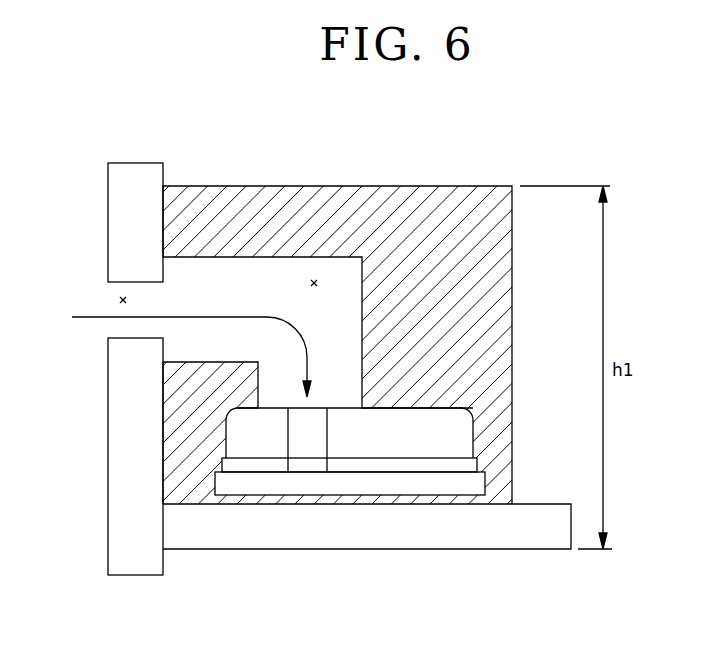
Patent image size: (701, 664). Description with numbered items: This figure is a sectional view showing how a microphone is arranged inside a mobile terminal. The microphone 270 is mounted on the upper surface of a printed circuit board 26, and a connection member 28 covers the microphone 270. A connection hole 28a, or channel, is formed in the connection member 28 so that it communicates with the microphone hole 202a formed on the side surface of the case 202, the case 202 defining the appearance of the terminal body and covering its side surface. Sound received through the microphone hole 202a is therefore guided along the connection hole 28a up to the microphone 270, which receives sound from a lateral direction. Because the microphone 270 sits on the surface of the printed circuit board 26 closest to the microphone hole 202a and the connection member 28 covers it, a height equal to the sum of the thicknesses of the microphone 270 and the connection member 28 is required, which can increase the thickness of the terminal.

The connection member 28 is at (498, 316).
The connection hole 28a is at (314, 280).
The case 202 is at (123, 453).
The microphone hole 202a is at (120, 300).
The microphone 270 is at (393, 485).
The printed circuit board 26 is at (542, 534).